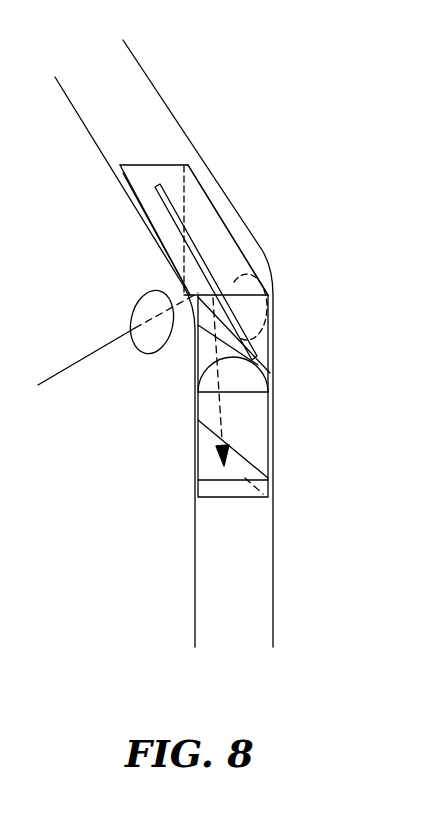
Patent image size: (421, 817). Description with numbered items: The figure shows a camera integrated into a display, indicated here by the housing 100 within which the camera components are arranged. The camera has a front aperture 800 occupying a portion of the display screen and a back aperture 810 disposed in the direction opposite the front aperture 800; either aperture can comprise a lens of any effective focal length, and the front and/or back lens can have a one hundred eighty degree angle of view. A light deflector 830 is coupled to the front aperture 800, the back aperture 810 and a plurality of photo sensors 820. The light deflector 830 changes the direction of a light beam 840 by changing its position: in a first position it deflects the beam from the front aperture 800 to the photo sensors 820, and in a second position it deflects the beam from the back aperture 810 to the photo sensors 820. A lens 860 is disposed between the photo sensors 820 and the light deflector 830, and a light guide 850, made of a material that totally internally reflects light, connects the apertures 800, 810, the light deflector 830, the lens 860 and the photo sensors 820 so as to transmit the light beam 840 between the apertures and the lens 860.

The imaging device / endoscope insertion tube 100 is at (140, 92).
The front aperture 800 is at (145, 292).
The back aperture 810 is at (250, 283).
The photo sensors 820 is at (265, 457).
The light deflector 830 is at (182, 222).
The light beam 840 is at (80, 362).
The light guide 850 is at (230, 227).
The lens 860 is at (265, 366).